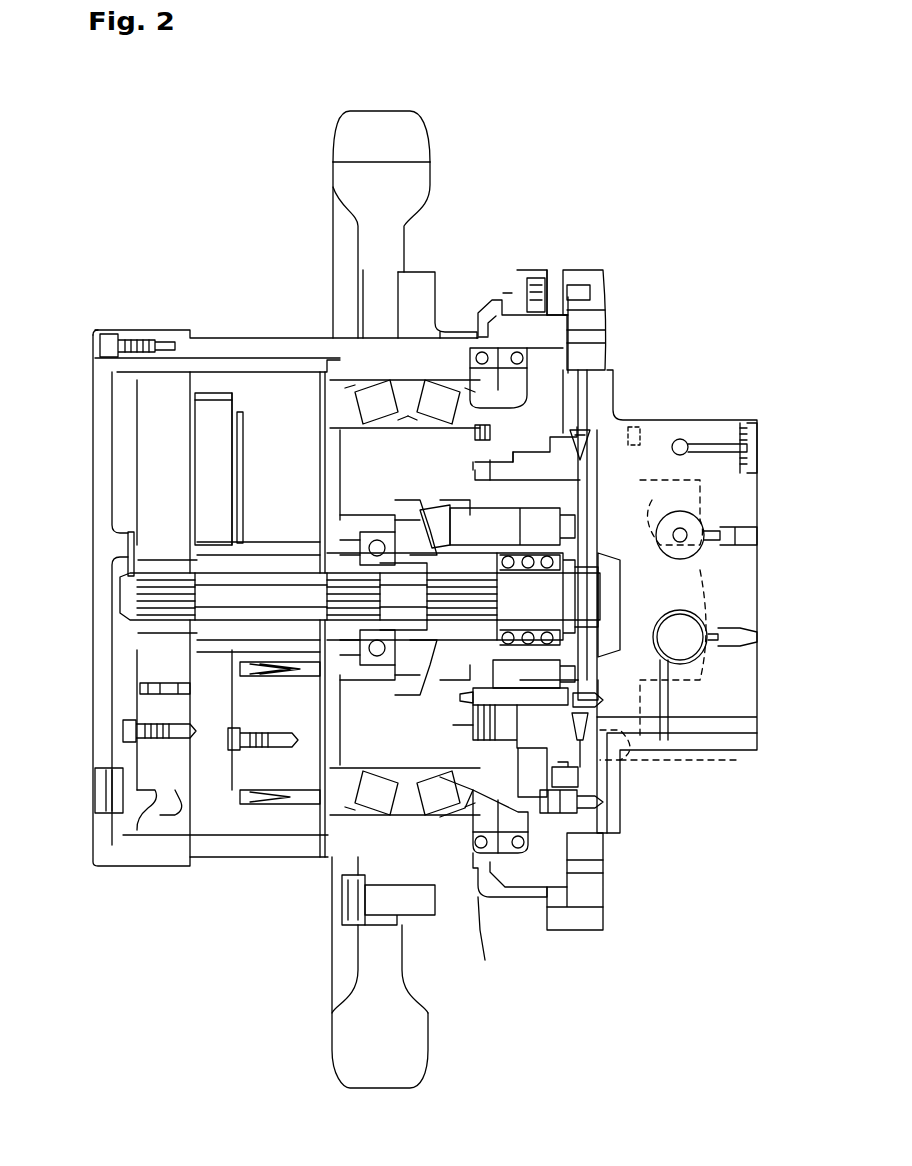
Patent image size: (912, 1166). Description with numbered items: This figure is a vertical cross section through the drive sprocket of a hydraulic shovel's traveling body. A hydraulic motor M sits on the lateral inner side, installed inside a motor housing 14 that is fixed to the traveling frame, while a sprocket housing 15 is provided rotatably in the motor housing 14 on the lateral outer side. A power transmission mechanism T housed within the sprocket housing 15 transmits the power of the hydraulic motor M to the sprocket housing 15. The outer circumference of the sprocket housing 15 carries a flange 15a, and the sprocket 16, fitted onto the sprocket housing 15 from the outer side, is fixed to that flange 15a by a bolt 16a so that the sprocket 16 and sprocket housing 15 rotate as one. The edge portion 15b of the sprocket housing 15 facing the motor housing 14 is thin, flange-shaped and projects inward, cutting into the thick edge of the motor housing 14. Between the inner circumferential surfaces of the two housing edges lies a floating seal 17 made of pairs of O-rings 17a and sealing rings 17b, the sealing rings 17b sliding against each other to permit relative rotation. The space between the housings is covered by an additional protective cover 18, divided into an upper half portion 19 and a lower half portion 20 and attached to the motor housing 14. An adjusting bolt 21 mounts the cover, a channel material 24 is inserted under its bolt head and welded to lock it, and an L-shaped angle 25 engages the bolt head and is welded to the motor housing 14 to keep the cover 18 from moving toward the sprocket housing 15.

The motor housing 14 is at (538, 407).
The sprocket housing 15 is at (240, 344).
The flange 15a is at (418, 285).
The edge portion 15b is at (480, 341).
The sprocket 16 is at (360, 137).
The bolt 16a is at (413, 905).
The floating seal 17 is at (560, 340).
The O-ring 17a is at (530, 357).
The sealing ring 17b is at (535, 378).
The additional protective cover 18 is at (507, 294).
The upper half portion 19 is at (490, 313).
The lower half portion 20 is at (487, 895).
The adjusting bolt 21 is at (568, 300).
The channel material 24 is at (568, 292).
The L-shaped angle 25 is at (535, 282).
The power transmission mechanism T is at (192, 474).
The hydraulic motor M is at (530, 693).